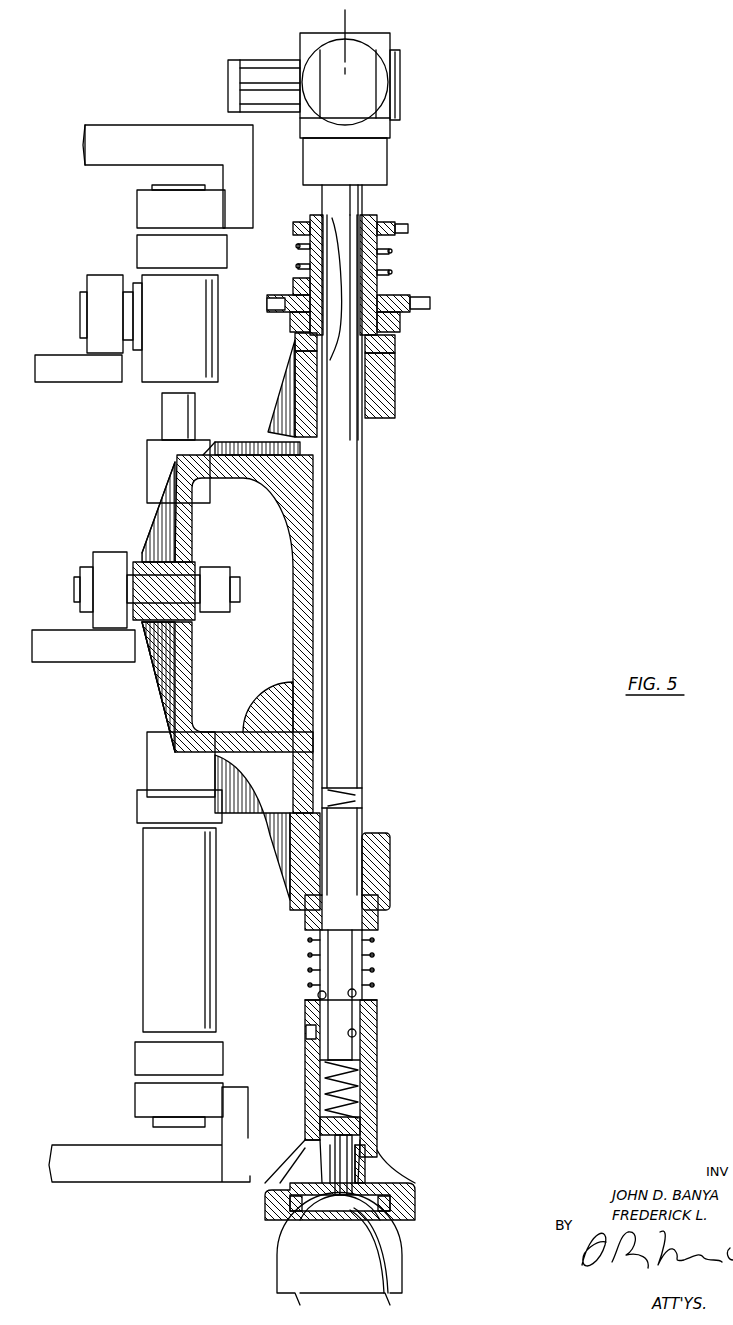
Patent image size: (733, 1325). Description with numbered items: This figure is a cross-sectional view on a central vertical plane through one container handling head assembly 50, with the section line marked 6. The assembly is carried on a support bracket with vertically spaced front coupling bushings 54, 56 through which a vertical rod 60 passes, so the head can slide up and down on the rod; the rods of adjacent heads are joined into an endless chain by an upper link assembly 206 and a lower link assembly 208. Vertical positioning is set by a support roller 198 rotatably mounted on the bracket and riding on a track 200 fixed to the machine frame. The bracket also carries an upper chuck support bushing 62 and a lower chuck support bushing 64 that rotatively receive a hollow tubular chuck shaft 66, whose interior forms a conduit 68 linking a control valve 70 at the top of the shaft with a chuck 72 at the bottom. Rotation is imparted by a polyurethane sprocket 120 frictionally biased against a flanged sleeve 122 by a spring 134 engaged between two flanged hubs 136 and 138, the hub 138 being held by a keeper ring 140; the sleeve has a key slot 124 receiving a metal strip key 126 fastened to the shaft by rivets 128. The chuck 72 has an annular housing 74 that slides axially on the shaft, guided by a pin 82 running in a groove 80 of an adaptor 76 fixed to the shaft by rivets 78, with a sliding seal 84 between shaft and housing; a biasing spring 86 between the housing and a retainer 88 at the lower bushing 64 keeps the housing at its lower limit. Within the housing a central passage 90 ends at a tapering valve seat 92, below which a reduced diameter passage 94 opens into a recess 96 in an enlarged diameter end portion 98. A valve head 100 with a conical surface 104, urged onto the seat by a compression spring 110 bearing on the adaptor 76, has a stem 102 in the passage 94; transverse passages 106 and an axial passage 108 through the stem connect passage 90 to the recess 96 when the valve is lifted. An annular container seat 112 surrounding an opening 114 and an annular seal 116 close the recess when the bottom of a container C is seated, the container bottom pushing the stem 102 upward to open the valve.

The section line 6 is at (352, 13).
The control valve 70 is at (408, 96).
The upper link assembly 206 is at (155, 295).
The vertical rod 60 is at (170, 403).
The front coupling bushing 54 is at (147, 460).
The front coupling bushing 56 is at (147, 779).
The support roller 198 is at (110, 560).
The track 200 is at (72, 655).
The lower link assembly 208 is at (152, 949).
The key slot 124 is at (310, 220).
The keeper ring 140 is at (380, 220).
The flanged hub 138 is at (400, 228).
The spring 134 is at (385, 251).
The rivets 128 is at (296, 239).
The flanged hub 136 is at (296, 280).
The sprocket 120 is at (430, 305).
The key 126 is at (296, 316).
The flanged sleeve 122 is at (390, 343).
The upper chuck support bushing 62 is at (392, 398).
The head assembly 50 is at (376, 706).
The chuck shaft 66 is at (348, 763).
The conduit 68 is at (365, 795).
The lower chuck support bushing 64 is at (388, 853).
The retainer 88 is at (376, 917).
The chuck 72 is at (410, 1020).
The sliding seal 84 is at (372, 984).
The biasing spring 86 is at (308, 955).
The rivets 78 is at (322, 995).
The groove 80 is at (305, 1009).
The pin 82 is at (305, 1032).
The adaptor 76 is at (366, 1039).
The compression spring 110 is at (377, 1078).
The central passage 90 is at (322, 1074).
The valve head 100 is at (320, 1124).
The annular housing 74 is at (378, 1110).
The valve seat 92 is at (360, 1143).
The conical surface 104 is at (318, 1136).
The transverse passages 106 is at (318, 1148).
The reduced diameter passage 94 is at (380, 1156).
The valve stem 102 is at (302, 1181).
The recess 96 is at (400, 1183).
The enlarged diameter end portion 98 is at (415, 1189).
The container seat 112 is at (418, 1210).
The annular seal 116 is at (386, 1220).
The axial passage 108 is at (340, 1197).
The opening 114 is at (292, 1228).
The container C is at (290, 1251).